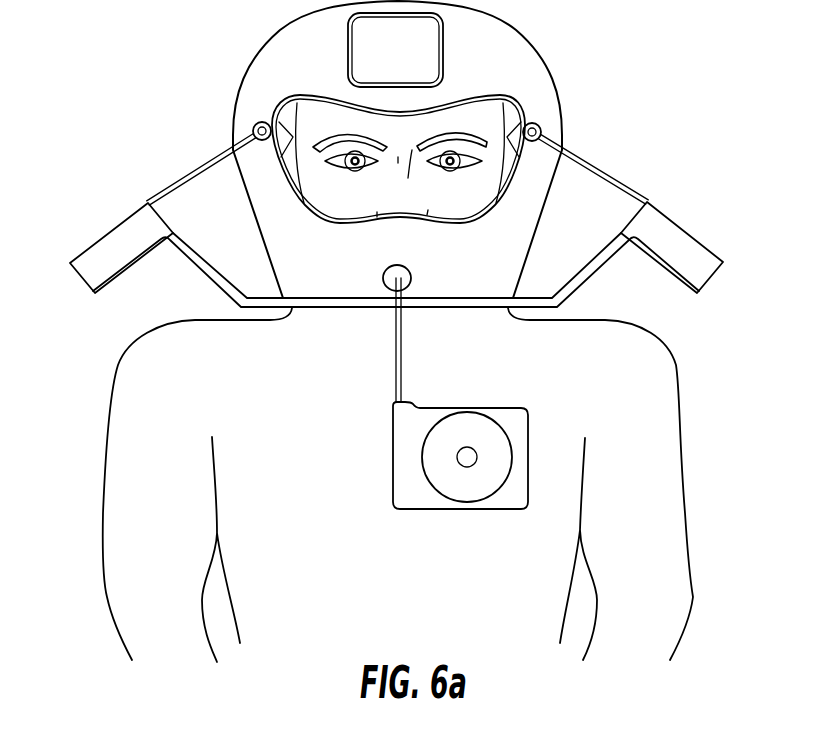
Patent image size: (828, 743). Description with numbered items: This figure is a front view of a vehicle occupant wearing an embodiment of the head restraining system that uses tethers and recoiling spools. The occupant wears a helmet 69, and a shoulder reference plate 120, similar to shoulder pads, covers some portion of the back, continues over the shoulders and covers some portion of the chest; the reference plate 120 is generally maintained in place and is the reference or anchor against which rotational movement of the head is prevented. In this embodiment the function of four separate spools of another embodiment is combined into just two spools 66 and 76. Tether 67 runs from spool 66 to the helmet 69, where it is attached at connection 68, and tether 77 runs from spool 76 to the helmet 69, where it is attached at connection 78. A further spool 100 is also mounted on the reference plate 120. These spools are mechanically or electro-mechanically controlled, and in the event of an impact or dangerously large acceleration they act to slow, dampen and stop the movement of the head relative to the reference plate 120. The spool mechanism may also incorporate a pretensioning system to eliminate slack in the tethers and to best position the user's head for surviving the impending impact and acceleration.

The spool 66 is at (102, 238).
The tether 67 is at (217, 156).
The connection 68 is at (263, 122).
The helmet 69 is at (412, 66).
The spool 76 is at (680, 226).
The tether 77 is at (580, 163).
The connection 78 is at (533, 123).
The spool 100 is at (392, 464).
The shoulder reference plate 120 is at (226, 291).